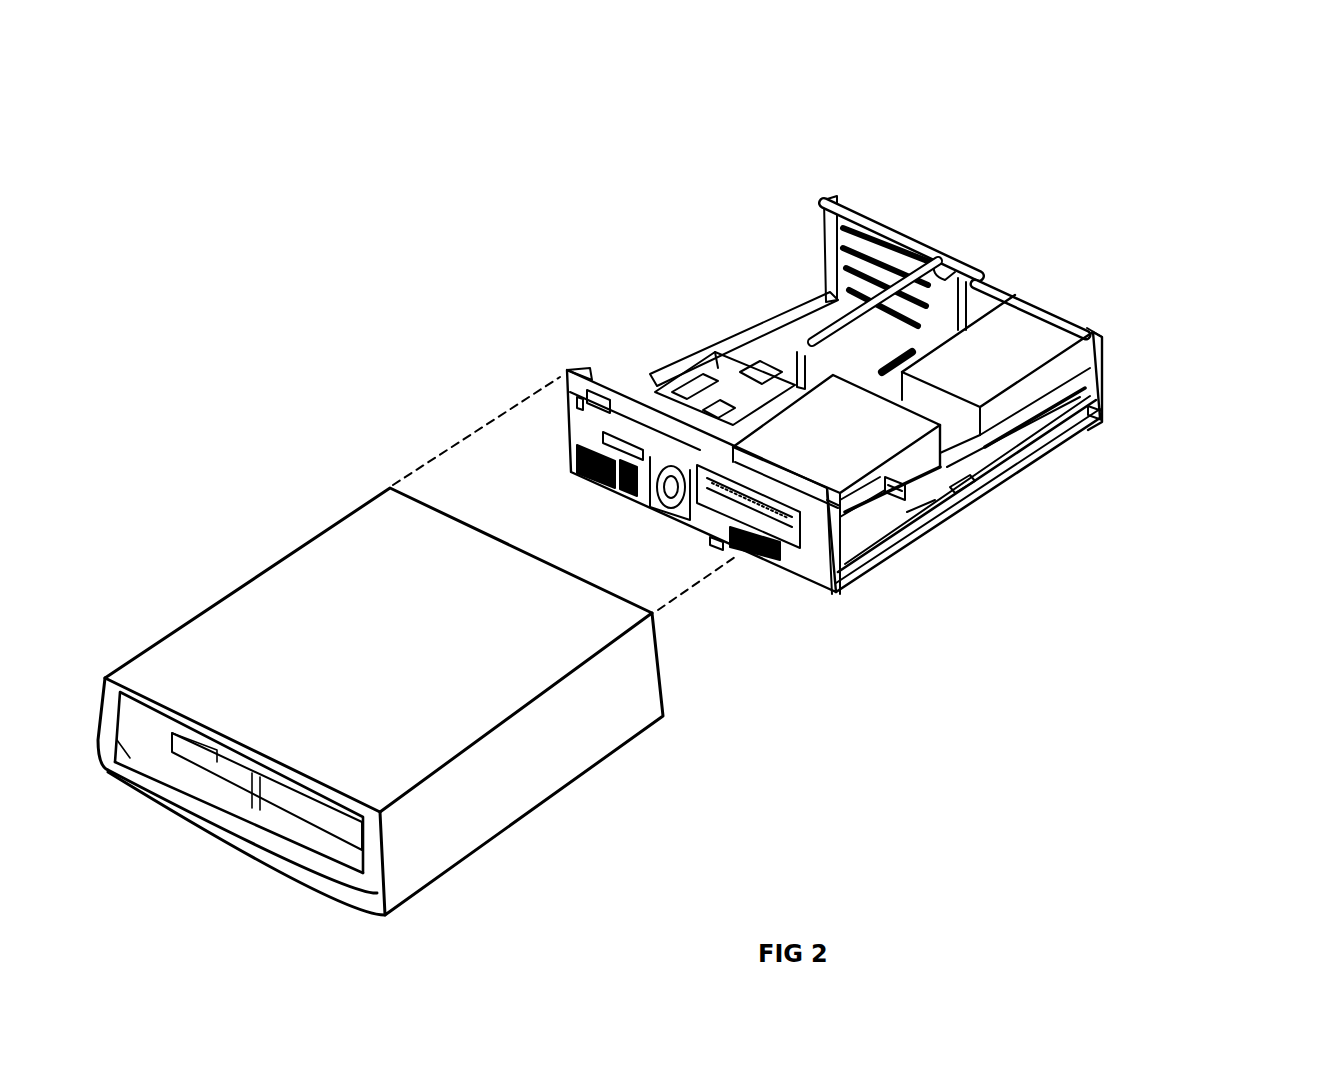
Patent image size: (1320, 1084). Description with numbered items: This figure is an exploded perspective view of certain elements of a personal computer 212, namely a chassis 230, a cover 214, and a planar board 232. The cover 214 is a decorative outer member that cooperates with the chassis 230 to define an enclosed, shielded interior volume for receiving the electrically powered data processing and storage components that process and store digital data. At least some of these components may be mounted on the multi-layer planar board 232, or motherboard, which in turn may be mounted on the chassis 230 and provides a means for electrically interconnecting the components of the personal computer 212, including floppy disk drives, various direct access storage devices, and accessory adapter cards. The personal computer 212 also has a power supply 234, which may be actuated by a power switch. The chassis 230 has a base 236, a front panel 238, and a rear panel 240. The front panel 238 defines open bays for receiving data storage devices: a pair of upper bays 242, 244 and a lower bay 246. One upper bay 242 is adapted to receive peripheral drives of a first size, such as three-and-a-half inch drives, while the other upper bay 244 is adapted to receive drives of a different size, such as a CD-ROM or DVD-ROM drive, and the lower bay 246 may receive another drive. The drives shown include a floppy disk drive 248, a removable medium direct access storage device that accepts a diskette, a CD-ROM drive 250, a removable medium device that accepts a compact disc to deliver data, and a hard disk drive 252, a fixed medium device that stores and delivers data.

The personal computer 212 is at (1205, 110).
The cover 214 is at (395, 650).
The chassis 230 is at (872, 220).
The planar board 232 is at (877, 364).
The power supply 234 is at (1008, 315).
The base 236 is at (963, 507).
The front panel 238 is at (563, 432).
The rear panel 240 is at (1102, 372).
The upper bay 242 is at (650, 467).
The upper bay 244 is at (832, 542).
The lower bay 246 is at (800, 553).
The floppy disk drive 248 is at (650, 413).
The CD-ROM drive 250 is at (837, 443).
The hard disk drive 252 is at (920, 523).